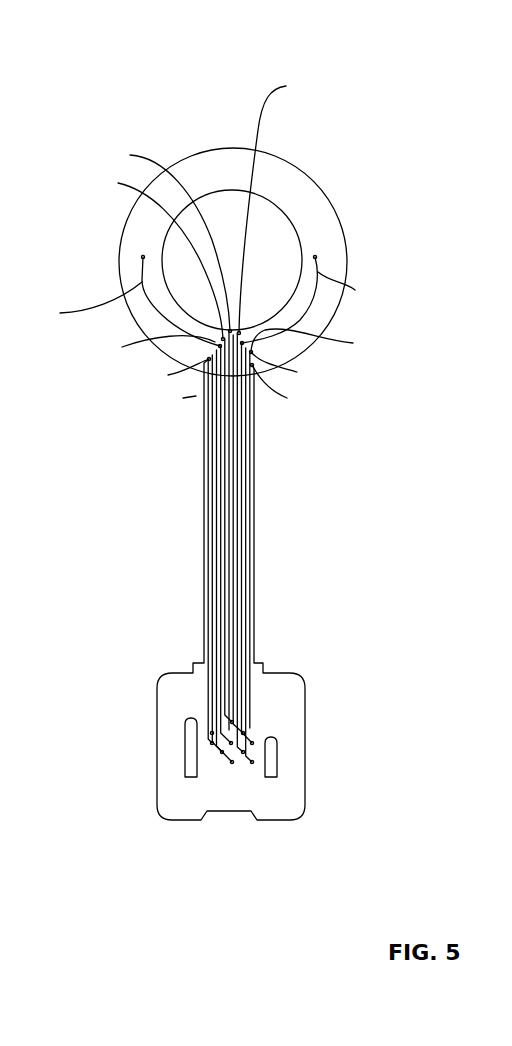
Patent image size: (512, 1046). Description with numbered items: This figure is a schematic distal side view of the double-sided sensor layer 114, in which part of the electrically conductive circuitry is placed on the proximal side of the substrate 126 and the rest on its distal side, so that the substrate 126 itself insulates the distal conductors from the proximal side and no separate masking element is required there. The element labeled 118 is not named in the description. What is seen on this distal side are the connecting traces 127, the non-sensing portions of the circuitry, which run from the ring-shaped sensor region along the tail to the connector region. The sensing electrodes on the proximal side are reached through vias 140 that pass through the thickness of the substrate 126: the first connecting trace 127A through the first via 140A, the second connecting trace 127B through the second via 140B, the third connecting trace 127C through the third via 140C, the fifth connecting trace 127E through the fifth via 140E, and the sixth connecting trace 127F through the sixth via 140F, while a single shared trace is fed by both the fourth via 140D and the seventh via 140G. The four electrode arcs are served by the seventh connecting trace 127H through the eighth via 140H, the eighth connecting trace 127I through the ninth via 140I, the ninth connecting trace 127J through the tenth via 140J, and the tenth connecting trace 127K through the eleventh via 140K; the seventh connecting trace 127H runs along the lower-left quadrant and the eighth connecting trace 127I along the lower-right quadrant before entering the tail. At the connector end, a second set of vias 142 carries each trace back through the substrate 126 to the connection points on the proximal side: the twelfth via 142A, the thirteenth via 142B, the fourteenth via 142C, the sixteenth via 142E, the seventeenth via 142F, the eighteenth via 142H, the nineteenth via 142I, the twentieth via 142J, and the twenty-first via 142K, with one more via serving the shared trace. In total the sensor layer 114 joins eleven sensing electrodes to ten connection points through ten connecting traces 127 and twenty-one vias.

The double-sided sensor layer 114 is at (398, 74).
The sensing electrode 118 is at (262, 192).
The substrate 126 is at (192, 165).
The connecting traces 127 is at (252, 435).
The first connecting trace 127A is at (233, 581).
The second connecting trace 127B is at (237, 540).
The third connecting trace 127C is at (226, 600).
The fifth connecting trace 127E is at (213, 515).
The sixth connecting trace 127F is at (209, 545).
The seventh connecting trace 127H is at (367, 287).
The eighth connecting trace 127I is at (77, 303).
The ninth connecting trace 127J is at (225, 649).
The tenth connecting trace 127K is at (243, 499).
The vias 140 is at (198, 392).
The first via 140A is at (147, 237).
The second via 140B is at (292, 203).
The third via 140C is at (138, 257).
The fourth via 140D is at (305, 368).
The fifth via 140E is at (158, 374).
The sixth via 140F is at (158, 398).
The seventh via 140G is at (299, 388).
The eighth via 140H is at (315, 257).
The ninth via 140I is at (143, 257).
The tenth via 140J is at (138, 349).
The eleventh via 140K is at (333, 343).
The vias 142 is at (283, 787).
The twelfth via 142A is at (262, 672).
The thirteenth via 142B is at (232, 762).
The fourteenth via 142C is at (212, 743).
The sixteenth via 142E is at (222, 752).
The seventeenth via 142F is at (231, 743).
The eighteenth via 142H is at (252, 743).
The nineteenth via 142I is at (212, 733).
The twentieth via 142J is at (243, 752).
The twenty-first via 142K is at (243, 733).